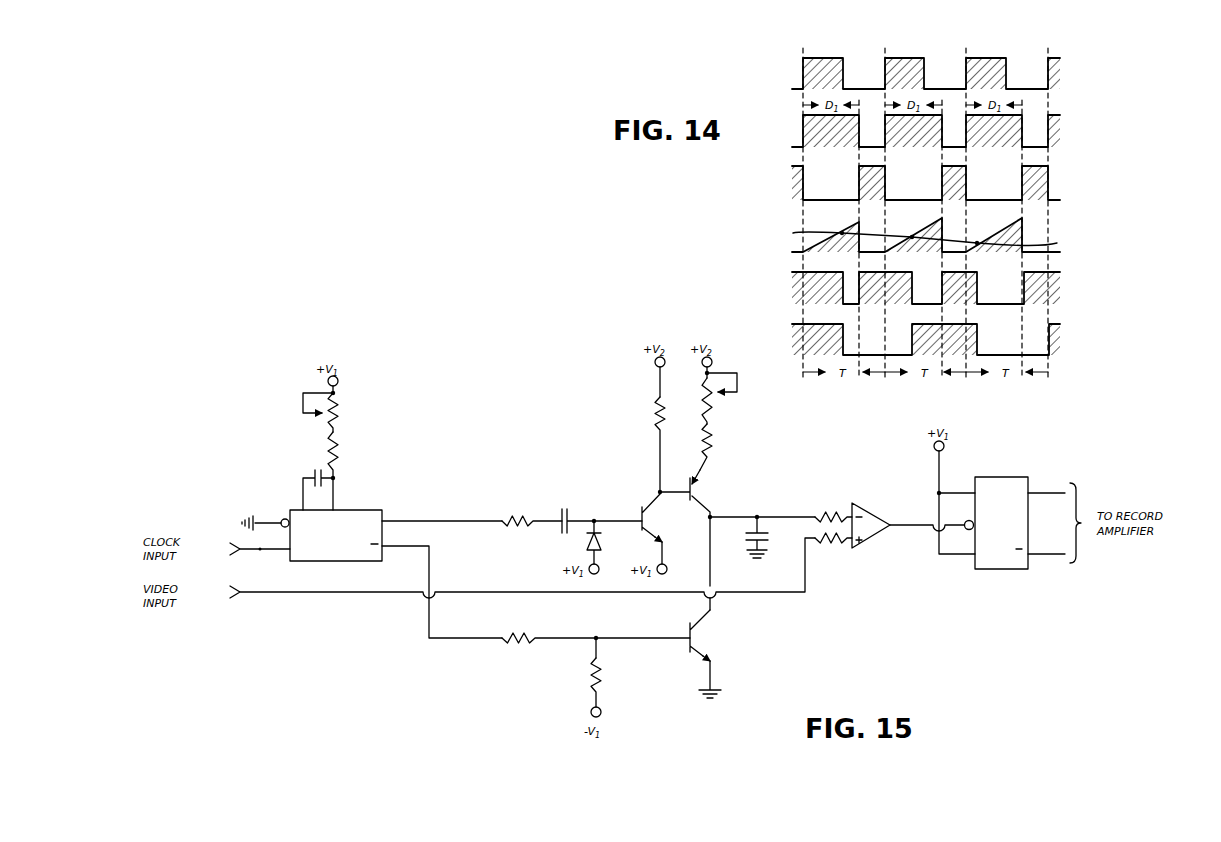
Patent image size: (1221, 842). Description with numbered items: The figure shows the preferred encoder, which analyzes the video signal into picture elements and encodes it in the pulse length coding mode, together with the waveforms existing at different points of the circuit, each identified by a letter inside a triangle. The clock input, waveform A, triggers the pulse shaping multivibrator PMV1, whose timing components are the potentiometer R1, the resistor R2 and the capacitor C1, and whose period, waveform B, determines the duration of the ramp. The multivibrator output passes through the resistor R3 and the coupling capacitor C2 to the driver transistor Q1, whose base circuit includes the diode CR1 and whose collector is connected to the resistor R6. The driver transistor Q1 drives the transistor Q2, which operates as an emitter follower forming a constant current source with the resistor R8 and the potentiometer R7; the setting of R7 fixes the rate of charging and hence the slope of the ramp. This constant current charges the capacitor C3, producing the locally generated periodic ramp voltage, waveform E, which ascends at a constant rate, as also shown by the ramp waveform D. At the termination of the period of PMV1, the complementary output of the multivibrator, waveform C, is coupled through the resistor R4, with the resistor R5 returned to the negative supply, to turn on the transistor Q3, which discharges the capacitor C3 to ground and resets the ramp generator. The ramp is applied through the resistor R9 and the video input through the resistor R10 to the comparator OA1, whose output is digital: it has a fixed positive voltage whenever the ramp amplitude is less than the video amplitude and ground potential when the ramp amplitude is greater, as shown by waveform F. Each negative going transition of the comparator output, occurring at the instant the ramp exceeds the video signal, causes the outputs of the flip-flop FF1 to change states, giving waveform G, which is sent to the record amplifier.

In FIG. 14, the clock input waveform A is at (1093, 58).
In FIG. 15, the clock input waveform A is at (260, 551).
In FIG. 14, the multivibrator period waveform B is at (1093, 118).
In FIG. 15, the multivibrator period waveform B is at (488, 523).
In FIG. 14, the complementary multivibrator output waveform C is at (1093, 172).
In FIG. 15, the complementary multivibrator output waveform C is at (432, 565).
In FIG. 14, the ramp waveform D is at (803, 235).
In FIG. 15, the ramp waveform D is at (768, 590).
In FIG. 14, the periodic ramp voltage waveform E is at (1030, 233).
In FIG. 15, the periodic ramp voltage waveform E is at (718, 515).
In FIG. 14, the comparator output waveform F is at (1093, 275).
In FIG. 15, the comparator output waveform F is at (903, 528).
In FIG. 14, the flip-flop output waveform G is at (1093, 330).
In FIG. 15, the flip-flop output waveform G is at (1048, 491).
In FIG. 15, the potentiometer R1 is at (331, 404).
In FIG. 15, the resistor R2 is at (344, 471).
In FIG. 15, the resistor R3 is at (532, 511).
In FIG. 15, the resistor R4 is at (596, 629).
In FIG. 15, the resistor R5 is at (606, 677).
In FIG. 15, the resistor R6 is at (646, 425).
In FIG. 15, the potentiometer R7 is at (719, 390).
In FIG. 15, the resistor R8 is at (716, 447).
In FIG. 15, the resistor R9 is at (833, 507).
In FIG. 15, the resistor R10 is at (833, 549).
In FIG. 15, the capacitor C1 is at (316, 485).
In FIG. 15, the capacitor C2 is at (599, 512).
In FIG. 15, the capacitor C3 is at (765, 536).
In FIG. 15, the diode CR1 is at (605, 546).
In FIG. 15, the driver transistor Q1 is at (654, 534).
In FIG. 15, the emitter follower transistor Q2 is at (686, 494).
In FIG. 15, the discharge transistor Q3 is at (705, 654).
In FIG. 15, the pulse shaping multivibrator PMV1 is at (312, 535).
In FIG. 15, the comparator OA1 is at (871, 525).
In FIG. 15, the flip-flop FF1 is at (999, 505).